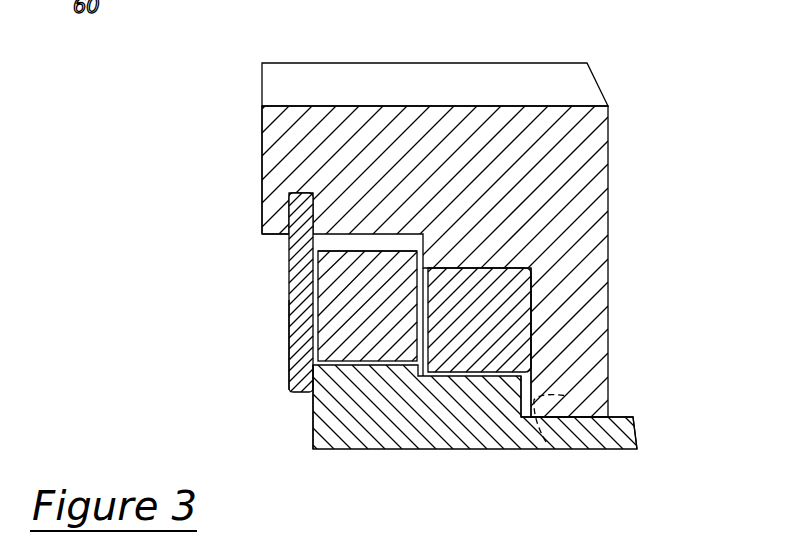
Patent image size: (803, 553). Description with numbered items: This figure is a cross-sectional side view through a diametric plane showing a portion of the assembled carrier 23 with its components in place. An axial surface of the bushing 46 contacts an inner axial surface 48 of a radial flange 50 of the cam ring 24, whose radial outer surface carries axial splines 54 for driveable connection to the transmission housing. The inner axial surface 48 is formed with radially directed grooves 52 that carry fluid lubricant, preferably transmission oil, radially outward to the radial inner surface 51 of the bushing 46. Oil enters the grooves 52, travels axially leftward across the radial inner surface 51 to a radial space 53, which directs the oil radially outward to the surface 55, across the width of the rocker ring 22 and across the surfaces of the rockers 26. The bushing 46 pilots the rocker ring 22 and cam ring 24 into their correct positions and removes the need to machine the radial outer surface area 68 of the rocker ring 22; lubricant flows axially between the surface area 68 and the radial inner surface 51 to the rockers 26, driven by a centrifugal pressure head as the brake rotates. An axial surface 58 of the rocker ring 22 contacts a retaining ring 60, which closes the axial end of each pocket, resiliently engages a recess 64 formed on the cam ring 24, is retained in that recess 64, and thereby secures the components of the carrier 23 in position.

The rocker ring 22 is at (315, 407).
The carrier 23 is at (637, 433).
The cam ring 24 is at (262, 143).
The rockers 26 is at (290, 360).
The bushing 46 is at (503, 295).
The inner axial surface 48 is at (527, 334).
The radial flange 50 is at (597, 328).
The radial inner surface 51 is at (493, 372).
The radially directed grooves 52 is at (546, 442).
The radial space 53 is at (418, 322).
The axial splines 54 is at (536, 76).
The surface 55 is at (356, 243).
The axial surface 58 is at (312, 437).
The retaining ring 60 is at (290, 322).
The recess 64 is at (290, 228).
The radial outer surface area 68 is at (457, 380).